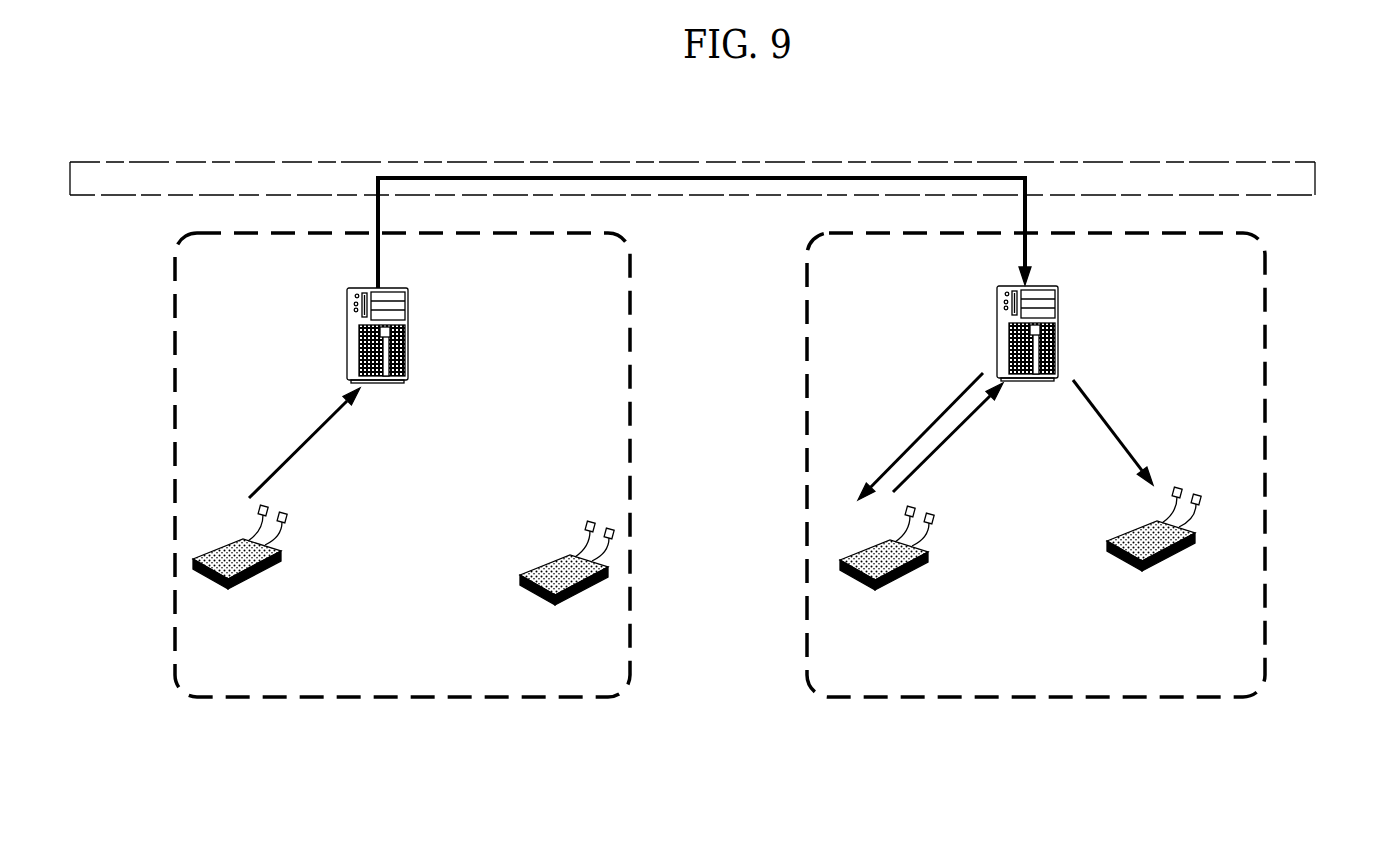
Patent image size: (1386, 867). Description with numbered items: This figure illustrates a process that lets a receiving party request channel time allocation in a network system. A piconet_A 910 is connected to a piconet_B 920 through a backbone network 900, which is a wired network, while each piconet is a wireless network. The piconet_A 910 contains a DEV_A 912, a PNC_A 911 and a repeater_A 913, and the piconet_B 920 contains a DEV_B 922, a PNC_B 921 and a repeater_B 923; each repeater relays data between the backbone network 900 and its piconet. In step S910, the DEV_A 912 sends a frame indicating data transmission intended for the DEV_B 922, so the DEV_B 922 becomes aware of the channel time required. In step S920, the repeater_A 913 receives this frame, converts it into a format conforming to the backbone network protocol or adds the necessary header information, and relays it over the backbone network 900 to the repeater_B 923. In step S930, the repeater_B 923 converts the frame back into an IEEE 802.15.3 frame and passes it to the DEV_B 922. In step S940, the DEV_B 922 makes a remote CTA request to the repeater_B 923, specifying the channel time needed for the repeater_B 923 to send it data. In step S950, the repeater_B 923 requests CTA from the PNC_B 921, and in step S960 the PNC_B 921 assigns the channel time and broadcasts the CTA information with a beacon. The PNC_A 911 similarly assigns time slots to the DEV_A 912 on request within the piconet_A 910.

The backbone network 900 is at (692, 154).
The piconet_A 910 is at (400, 700).
The PNC_A 911 is at (567, 582).
The DEV_A 912 is at (240, 568).
The repeater_A 913 is at (422, 355).
The piconet_B 920 is at (1033, 700).
The PNC_B 921 is at (1154, 554).
The DEV_B 922 is at (887, 575).
The repeater_B 923 is at (1083, 320).
The step of sending a frame indicating data transmission S910 is at (295, 457).
The step of relaying the frame indicating data transmission S920 is at (428, 176).
The step of converting and forwarding the frame indicating data transmission S930 is at (917, 438).
The remote CTA request step S940 is at (928, 458).
The CTA request step S950 is at (1105, 412).
The CTA S960 is at (1256, 542).